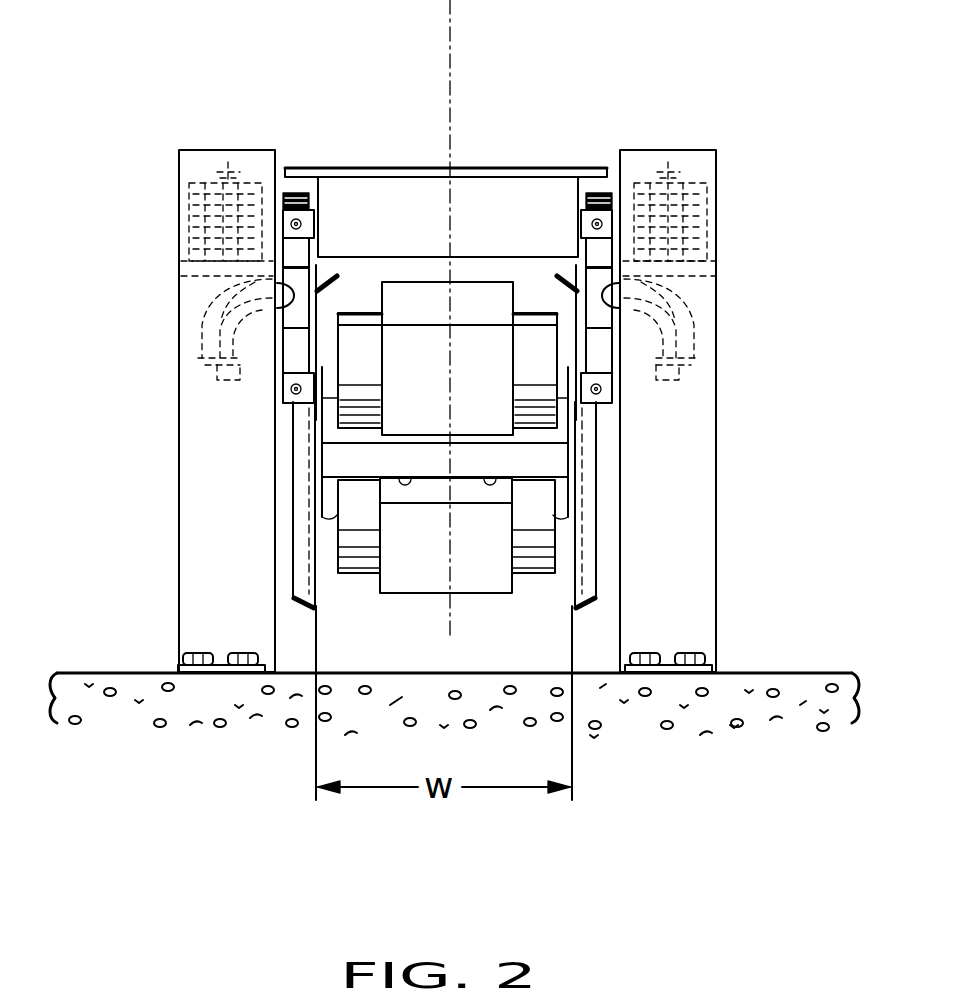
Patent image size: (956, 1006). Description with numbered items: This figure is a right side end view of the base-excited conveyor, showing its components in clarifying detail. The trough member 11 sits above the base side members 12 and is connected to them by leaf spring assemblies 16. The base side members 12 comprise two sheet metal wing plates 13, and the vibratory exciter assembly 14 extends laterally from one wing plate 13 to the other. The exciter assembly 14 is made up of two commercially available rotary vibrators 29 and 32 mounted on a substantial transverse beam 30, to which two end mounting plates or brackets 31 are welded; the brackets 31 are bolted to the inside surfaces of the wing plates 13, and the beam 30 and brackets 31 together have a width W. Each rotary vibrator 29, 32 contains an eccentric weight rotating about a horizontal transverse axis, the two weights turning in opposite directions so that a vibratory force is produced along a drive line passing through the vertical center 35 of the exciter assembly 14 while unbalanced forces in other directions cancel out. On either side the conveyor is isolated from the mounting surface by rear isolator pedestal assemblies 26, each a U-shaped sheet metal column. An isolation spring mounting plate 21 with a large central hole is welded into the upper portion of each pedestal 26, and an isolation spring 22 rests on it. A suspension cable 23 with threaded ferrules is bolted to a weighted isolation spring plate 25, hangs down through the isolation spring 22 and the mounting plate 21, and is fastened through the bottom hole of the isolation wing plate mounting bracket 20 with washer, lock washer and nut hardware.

The trough member 11 is at (470, 166).
The base side members 12 is at (270, 559).
The wing plates 13 is at (294, 487).
The vibratory exciter assembly 14 is at (423, 280).
The leaf spring assemblies 16 is at (610, 148).
The isolation wing plate mounting bracket 20 is at (208, 316).
The isolation spring mounting plate 21 is at (182, 267).
The isolation spring 22 is at (190, 201).
The suspension cable 23 is at (698, 278).
The weighted isolation spring plate 25 is at (665, 170).
The rear isolator pedestal assemblies 26 is at (178, 417).
The rotary vibrator 29 is at (502, 391).
The transverse beam 30 is at (560, 460).
The end mounting plates or brackets 31 is at (567, 523).
The rotary vibrator 32 is at (438, 551).
The vertical center 35 is at (452, 22).